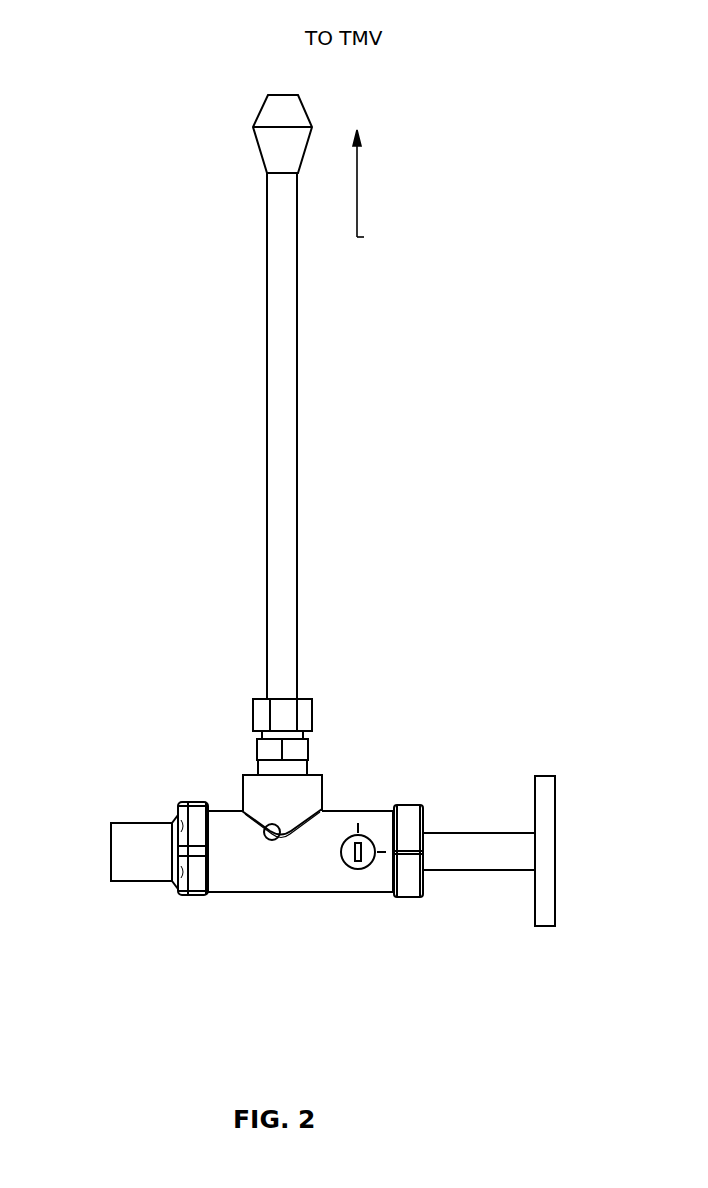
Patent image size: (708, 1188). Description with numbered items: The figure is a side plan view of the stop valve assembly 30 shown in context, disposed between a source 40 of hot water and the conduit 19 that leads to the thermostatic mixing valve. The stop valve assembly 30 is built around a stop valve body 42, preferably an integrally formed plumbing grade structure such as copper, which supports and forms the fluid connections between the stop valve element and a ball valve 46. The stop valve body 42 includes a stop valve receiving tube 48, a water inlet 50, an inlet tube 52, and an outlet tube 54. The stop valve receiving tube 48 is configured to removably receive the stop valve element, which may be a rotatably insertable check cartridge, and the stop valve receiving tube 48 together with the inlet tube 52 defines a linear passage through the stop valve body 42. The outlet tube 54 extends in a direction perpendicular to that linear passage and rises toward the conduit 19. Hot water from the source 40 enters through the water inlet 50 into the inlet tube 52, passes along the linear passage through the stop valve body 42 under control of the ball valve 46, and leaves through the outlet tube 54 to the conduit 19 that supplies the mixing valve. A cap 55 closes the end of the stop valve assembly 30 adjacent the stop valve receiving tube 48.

The conduit 19 is at (366, 397).
The outlet tube 54 is at (353, 670).
The stop valve assembly 30 is at (361, 800).
The ball valve 46 is at (367, 847).
The stop valve body 42 is at (280, 924).
The inlet tube 52 is at (309, 942).
The stop valve receiving tube 48 is at (235, 892).
The cap 55 is at (105, 826).
The water inlet 50 is at (425, 872).
The source 40 is at (501, 797).